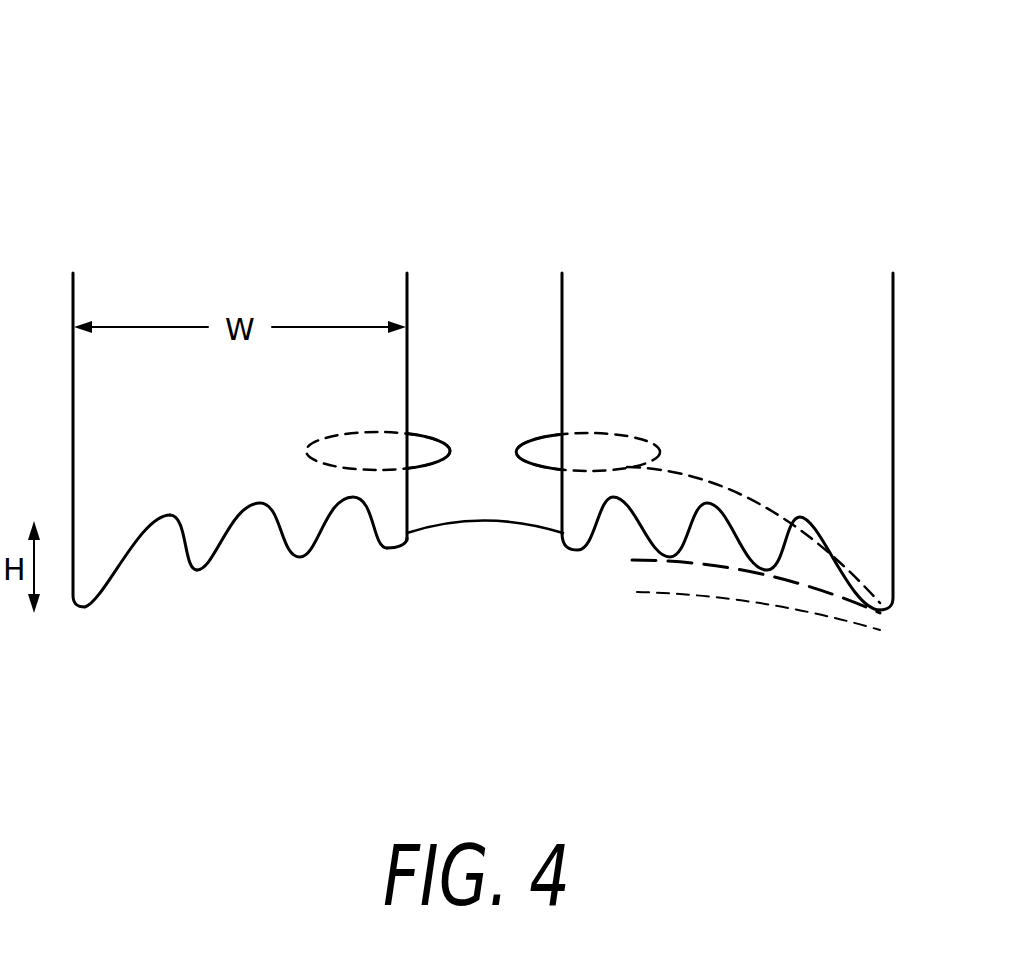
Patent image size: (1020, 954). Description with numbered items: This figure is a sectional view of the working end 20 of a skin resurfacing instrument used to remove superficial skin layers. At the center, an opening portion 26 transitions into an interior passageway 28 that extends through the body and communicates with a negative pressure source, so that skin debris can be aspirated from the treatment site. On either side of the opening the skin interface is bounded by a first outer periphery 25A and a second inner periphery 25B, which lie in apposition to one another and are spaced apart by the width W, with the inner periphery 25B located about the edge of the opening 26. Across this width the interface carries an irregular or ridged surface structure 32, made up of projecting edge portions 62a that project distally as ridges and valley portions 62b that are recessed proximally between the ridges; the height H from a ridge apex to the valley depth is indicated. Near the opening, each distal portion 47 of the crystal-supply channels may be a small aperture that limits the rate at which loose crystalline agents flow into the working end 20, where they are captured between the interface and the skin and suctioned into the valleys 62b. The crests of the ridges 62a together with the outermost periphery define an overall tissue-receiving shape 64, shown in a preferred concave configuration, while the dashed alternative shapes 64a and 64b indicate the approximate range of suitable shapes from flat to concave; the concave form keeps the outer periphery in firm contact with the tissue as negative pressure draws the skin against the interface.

The working end 20 is at (153, 96).
The first outer periphery 25A is at (97, 605).
The second inner periphery 25B is at (396, 550).
The opening portion 26 is at (490, 513).
The interior passageway 28 is at (562, 308).
The ridged surface structure 32 is at (180, 558).
The distal portion of channels 47 is at (483, 335).
The projecting edge portion 62a is at (287, 558).
The valley portion 62b is at (610, 503).
The tissue-receiving shape 64 is at (737, 573).
The alternative tissue-receiving shape 64a is at (682, 592).
The alternative tissue-receiving shape 64b is at (707, 487).